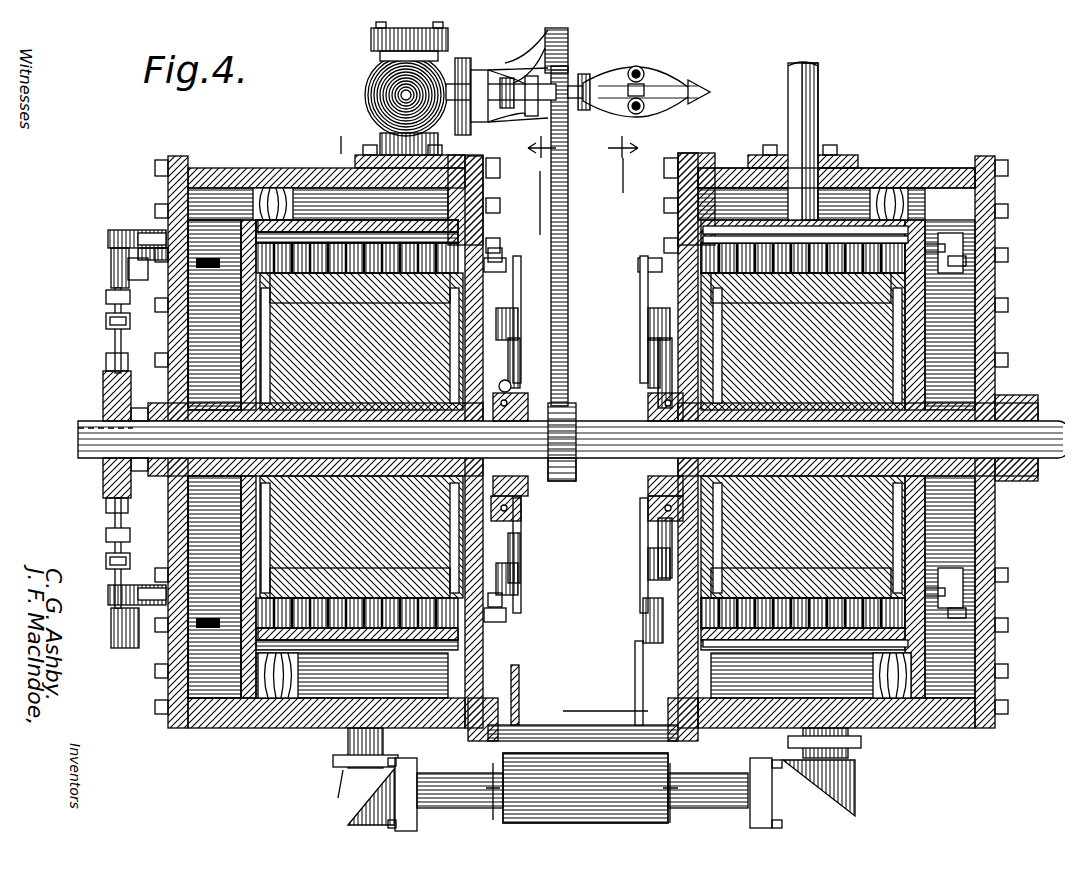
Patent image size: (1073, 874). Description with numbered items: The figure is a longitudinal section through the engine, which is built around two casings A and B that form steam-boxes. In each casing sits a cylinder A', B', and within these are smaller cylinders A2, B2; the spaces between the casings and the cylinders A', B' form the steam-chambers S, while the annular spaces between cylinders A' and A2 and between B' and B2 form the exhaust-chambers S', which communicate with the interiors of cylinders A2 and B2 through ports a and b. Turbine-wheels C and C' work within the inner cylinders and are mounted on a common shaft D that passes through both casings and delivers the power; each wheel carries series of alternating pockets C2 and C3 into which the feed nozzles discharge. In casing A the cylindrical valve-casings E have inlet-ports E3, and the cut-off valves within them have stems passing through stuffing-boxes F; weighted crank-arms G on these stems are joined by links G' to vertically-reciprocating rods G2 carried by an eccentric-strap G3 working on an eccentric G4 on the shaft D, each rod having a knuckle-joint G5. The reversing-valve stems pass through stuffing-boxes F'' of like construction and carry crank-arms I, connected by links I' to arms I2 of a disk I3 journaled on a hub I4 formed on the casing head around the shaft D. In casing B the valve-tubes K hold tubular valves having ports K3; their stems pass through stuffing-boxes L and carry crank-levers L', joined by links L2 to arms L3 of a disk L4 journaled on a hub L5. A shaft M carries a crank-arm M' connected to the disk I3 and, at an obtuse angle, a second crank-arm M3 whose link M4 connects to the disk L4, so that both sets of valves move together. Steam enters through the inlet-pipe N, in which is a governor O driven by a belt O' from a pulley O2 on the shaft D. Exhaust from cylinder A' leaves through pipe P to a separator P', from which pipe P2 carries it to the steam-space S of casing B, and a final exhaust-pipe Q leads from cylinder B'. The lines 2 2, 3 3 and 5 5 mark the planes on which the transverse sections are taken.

The steam-chambers S is at (593, 455).
The exhaust-chambers S' is at (581, 447).
The valve-casings E is at (222, 260).
The inlet-ports E3 is at (160, 240).
The ports a is at (320, 240).
The casing A is at (357, 195).
The cylinder A' is at (501, 401).
The cylinder A2 is at (525, 648).
The ports b is at (845, 240).
The casing B is at (836, 157).
The cylinder B' is at (805, 180).
The cylinder B2 is at (880, 232).
The turbine-wheel C is at (361, 435).
The turbine-wheel C' is at (803, 435).
The pockets C2 is at (795, 245).
The pockets C3 is at (345, 610).
The shaft D is at (75, 435).
The stuffing-boxes F is at (133, 452).
The stuffing-box F'' is at (514, 430).
The weighted crank-arms G is at (104, 453).
The link G' is at (103, 461).
The vertically-reciprocating rods G2 is at (98, 526).
The eccentric-strap G3 is at (95, 375).
The eccentric G4 is at (95, 403).
The knuckle-joint G5 is at (98, 553).
The crank-arms I is at (517, 434).
The link I' is at (524, 458).
The arms I2 is at (505, 348).
The disk I3 is at (512, 500).
The hub I4 is at (515, 480).
The valve-tubes K is at (955, 268).
The port K3 is at (958, 252).
The stuffing-boxes L is at (645, 249).
The crank-lever L' is at (634, 434).
The links L2 is at (640, 350).
The arms L3 is at (665, 350).
The disk L4 is at (626, 517).
The hub L5 is at (640, 480).
The shaft M is at (583, 717).
The crank-arm M' is at (540, 693).
The crank-arm M3 is at (640, 670).
The link M4 is at (635, 600).
The steam-inlet pipe N is at (360, 30).
The governor O is at (444, 103).
The belt O' is at (556, 254).
The pulley O2 is at (568, 460).
The exhaust-pipe P is at (518, 769).
The separator P' is at (585, 788).
The pipe P2 is at (715, 765).
The final exhaust-pipe Q is at (812, 90).
The section line 2 is at (644, 474).
The section line 3 is at (519, 473).
The section line 5 is at (333, 463).